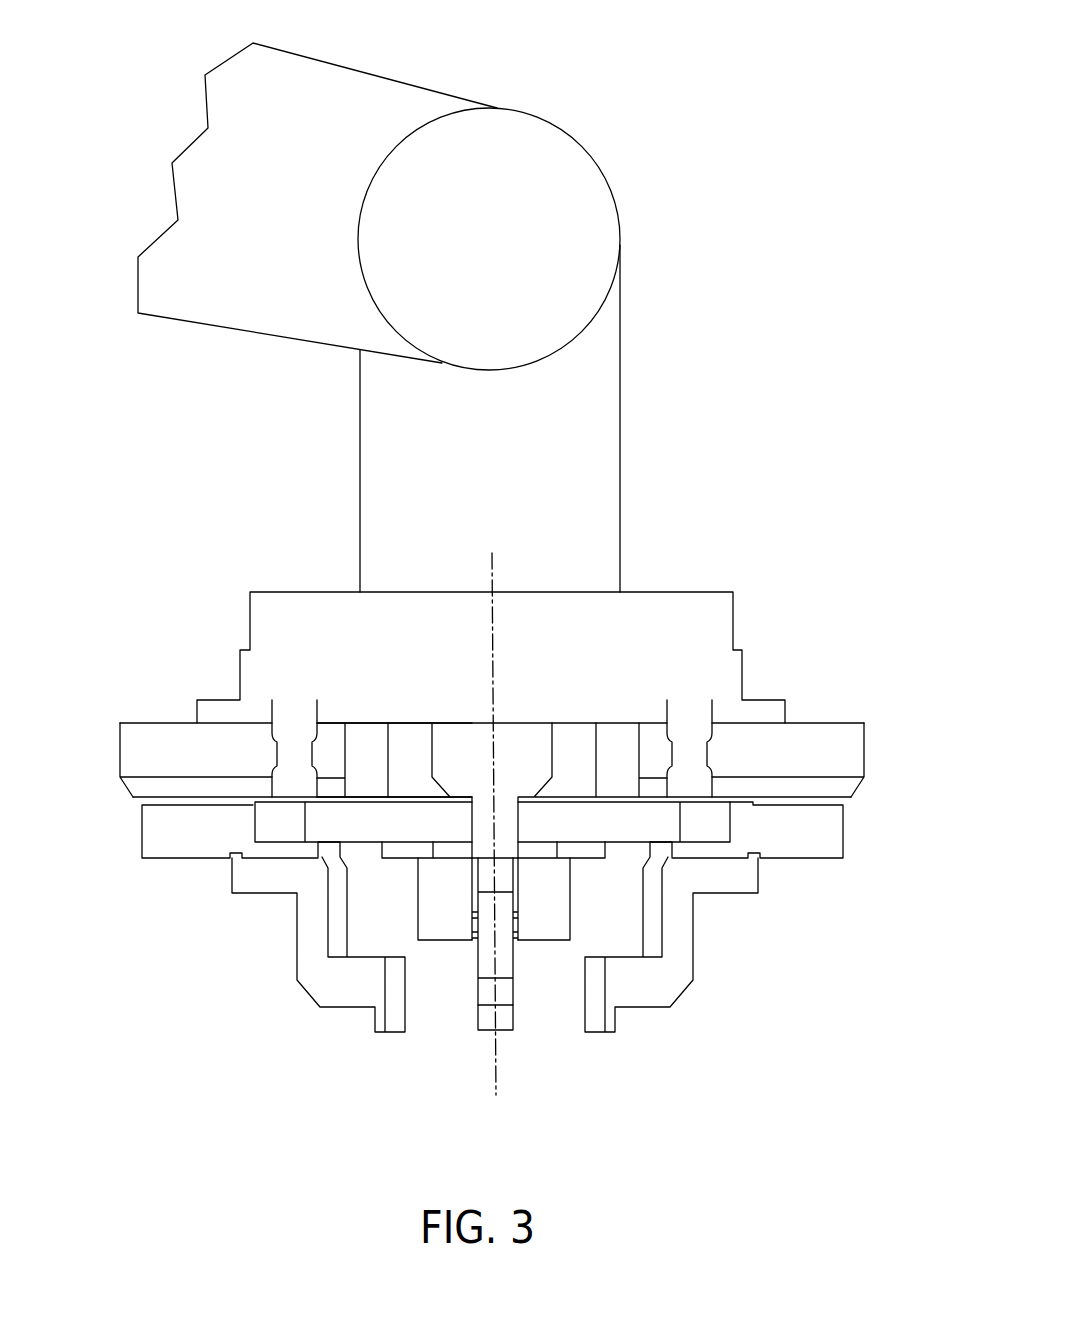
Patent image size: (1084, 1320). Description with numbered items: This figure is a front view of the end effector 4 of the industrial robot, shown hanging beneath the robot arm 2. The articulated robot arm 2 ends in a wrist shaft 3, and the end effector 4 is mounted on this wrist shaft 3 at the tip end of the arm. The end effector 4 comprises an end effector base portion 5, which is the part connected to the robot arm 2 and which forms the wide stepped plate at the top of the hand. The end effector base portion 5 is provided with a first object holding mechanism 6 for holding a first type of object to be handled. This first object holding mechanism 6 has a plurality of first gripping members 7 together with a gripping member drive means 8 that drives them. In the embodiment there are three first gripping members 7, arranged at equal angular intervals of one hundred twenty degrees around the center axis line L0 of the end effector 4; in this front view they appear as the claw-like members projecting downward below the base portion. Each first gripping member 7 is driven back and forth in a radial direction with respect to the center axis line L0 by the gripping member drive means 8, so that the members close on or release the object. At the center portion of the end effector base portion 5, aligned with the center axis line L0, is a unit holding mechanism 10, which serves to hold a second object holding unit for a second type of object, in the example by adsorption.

The robot arm 2 is at (405, 83).
The wrist shaft 3 is at (625, 495).
The end effector 4 is at (786, 506).
The end effector base portion 5 is at (735, 605).
The first object holding mechanism 6 is at (506, 813).
The first gripping members 7 is at (320, 985).
The gripping member drive means 8 is at (442, 740).
The unit holding mechanism 10 is at (527, 940).
The center axis line L0 is at (500, 1060).